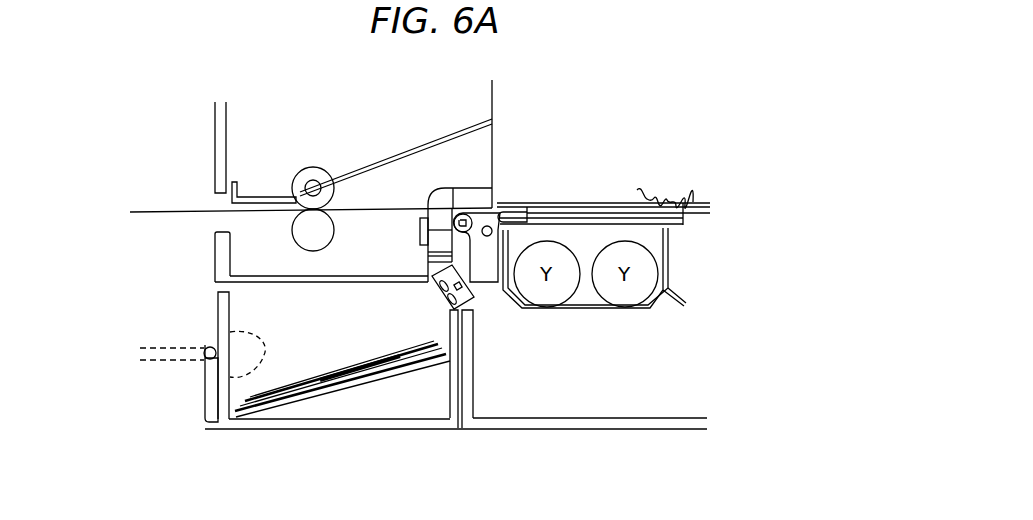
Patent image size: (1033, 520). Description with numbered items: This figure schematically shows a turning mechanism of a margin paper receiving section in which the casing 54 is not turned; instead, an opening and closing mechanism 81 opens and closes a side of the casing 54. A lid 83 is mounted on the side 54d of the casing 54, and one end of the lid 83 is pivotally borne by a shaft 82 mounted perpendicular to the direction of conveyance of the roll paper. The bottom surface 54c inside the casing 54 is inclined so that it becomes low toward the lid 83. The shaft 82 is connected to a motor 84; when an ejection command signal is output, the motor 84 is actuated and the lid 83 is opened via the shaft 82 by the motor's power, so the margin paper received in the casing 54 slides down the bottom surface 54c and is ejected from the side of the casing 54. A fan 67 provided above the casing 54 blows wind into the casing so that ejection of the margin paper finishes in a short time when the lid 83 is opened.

The opening and closing mechanism 81 is at (167, 332).
The shaft 82 is at (209, 346).
The lid 83 is at (209, 424).
The motor 84 is at (265, 352).
The casing 54 is at (415, 431).
The bottom surface 54c is at (345, 398).
The side 54d is at (232, 294).
The fan 67 is at (470, 300).